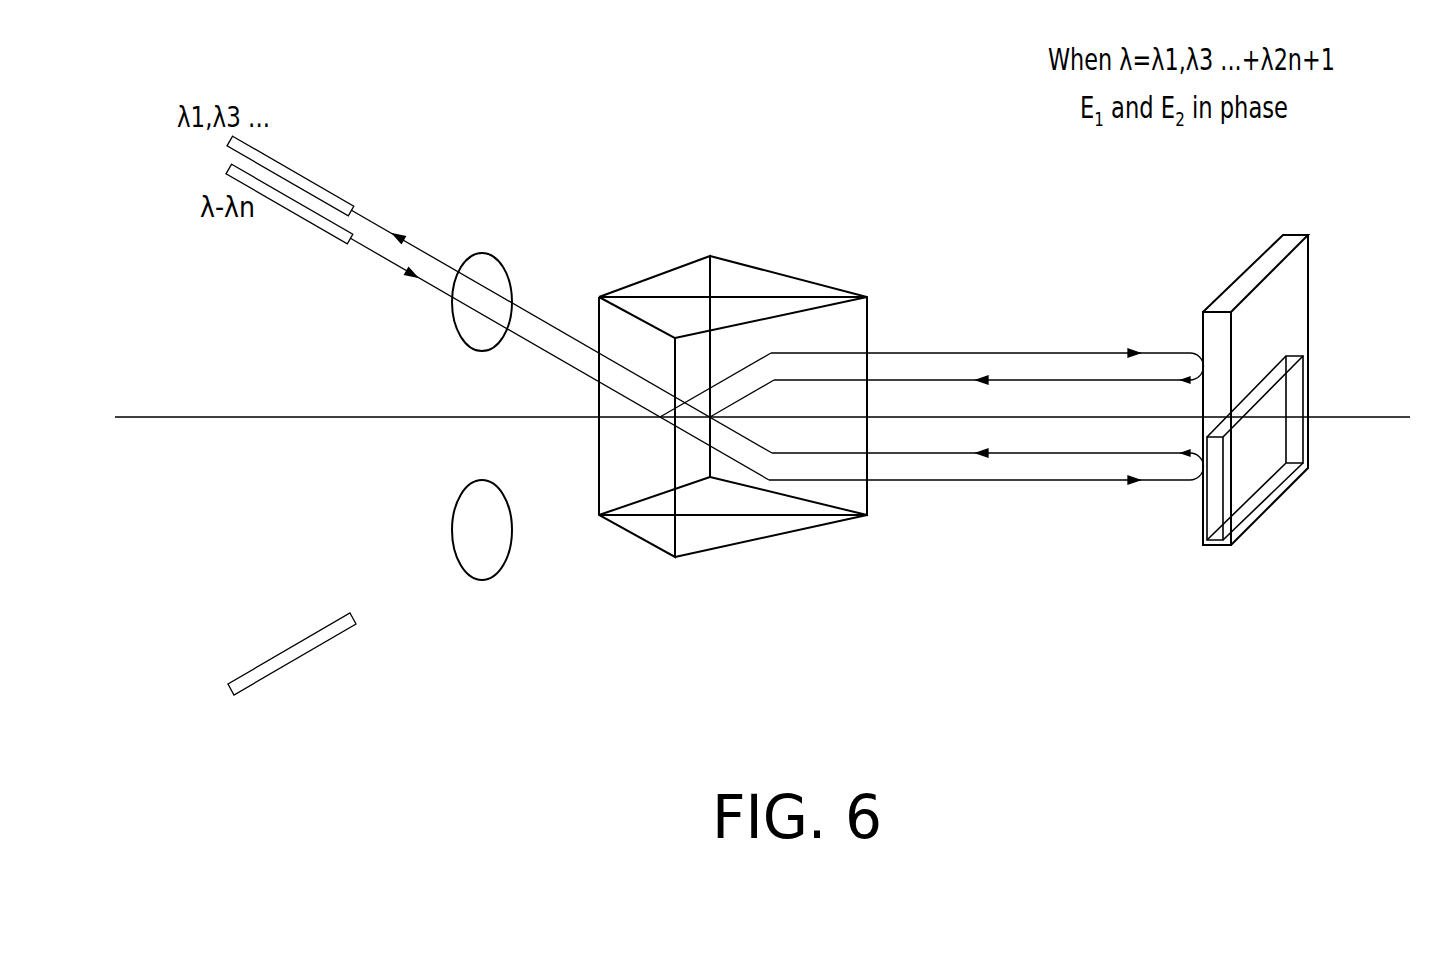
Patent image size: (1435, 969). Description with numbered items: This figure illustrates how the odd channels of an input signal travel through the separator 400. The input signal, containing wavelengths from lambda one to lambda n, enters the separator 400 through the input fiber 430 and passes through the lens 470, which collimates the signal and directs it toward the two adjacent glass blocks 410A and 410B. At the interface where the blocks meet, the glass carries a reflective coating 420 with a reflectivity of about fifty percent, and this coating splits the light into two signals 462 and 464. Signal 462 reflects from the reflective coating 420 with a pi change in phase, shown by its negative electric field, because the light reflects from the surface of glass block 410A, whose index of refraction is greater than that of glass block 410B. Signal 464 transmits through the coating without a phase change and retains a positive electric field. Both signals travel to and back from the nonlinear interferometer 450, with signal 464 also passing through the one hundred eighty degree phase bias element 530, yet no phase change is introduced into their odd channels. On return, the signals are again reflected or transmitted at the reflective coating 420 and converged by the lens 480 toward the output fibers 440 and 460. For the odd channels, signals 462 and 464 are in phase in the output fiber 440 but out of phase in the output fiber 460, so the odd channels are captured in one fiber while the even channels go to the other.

The separator 400 is at (866, 136).
The glass block 410A is at (615, 310).
The glass block 410B is at (668, 268).
The reflective coating 420 is at (608, 418).
The input fiber 430 is at (320, 233).
The output fiber 440 is at (314, 184).
The nonlinear interferometer 450 is at (1300, 233).
The output fiber 460 is at (307, 654).
The signal 462 is at (1052, 350).
The signal 464 is at (1052, 484).
The lens 470 is at (479, 253).
The lens 480 is at (493, 576).
The 180 degree phase bias element 530 is at (1203, 524).